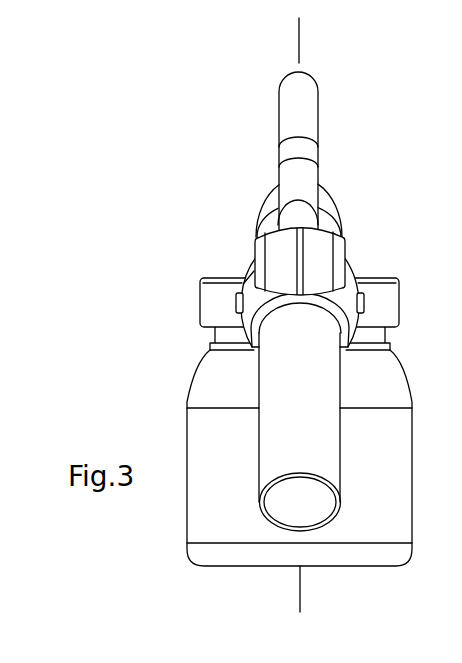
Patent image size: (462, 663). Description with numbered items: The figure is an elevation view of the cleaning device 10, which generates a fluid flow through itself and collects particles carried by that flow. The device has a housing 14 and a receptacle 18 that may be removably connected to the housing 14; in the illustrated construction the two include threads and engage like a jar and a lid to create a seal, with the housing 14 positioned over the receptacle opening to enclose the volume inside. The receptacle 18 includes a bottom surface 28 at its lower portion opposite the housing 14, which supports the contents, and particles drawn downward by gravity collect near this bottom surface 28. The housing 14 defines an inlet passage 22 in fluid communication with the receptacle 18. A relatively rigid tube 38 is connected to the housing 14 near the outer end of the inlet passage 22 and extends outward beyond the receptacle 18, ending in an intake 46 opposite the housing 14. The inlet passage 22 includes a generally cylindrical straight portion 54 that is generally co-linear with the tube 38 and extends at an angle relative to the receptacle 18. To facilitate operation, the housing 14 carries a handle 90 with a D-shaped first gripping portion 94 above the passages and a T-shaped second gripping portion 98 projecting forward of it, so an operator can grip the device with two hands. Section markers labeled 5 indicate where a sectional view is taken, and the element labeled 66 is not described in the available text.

The section line 5- 5 is at (299, 27).
The cleaning device 10 is at (121, 234).
The housing 14 is at (188, 298).
The receptacle 18 is at (176, 398).
The inlet passage 22 is at (342, 215).
The bottom surface 28 is at (388, 567).
The tube 38 is at (258, 457).
The intake 46 is at (262, 513).
The straight portion 54 is at (345, 253).
The collar 66 is at (363, 305).
The handle 90 is at (266, 155).
The first gripping portion 94 is at (319, 98).
The second gripping portion 98 is at (256, 239).